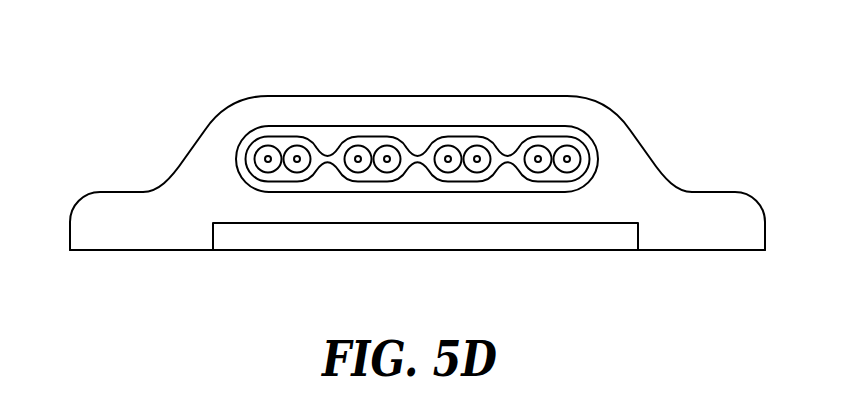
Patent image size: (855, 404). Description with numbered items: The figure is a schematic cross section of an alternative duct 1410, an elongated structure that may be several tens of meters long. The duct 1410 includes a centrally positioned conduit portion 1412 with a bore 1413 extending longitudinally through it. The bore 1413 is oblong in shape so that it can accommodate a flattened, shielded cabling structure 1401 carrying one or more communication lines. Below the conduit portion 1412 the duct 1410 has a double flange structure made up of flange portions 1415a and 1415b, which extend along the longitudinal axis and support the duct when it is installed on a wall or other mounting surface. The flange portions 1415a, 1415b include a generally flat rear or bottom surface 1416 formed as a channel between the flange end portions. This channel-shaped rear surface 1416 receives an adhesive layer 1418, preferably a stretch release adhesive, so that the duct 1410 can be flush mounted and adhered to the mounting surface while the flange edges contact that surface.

The duct 1410 is at (624, 35).
The conduit portion 1412 is at (411, 173).
The bore 1413 is at (330, 136).
The shielded cabling structure 1401 is at (456, 135).
The flange portion 1415a is at (712, 202).
The flange portion 1415b is at (117, 198).
The rear or bottom surface 1416 is at (244, 223).
The adhesive layer 1418 is at (598, 239).